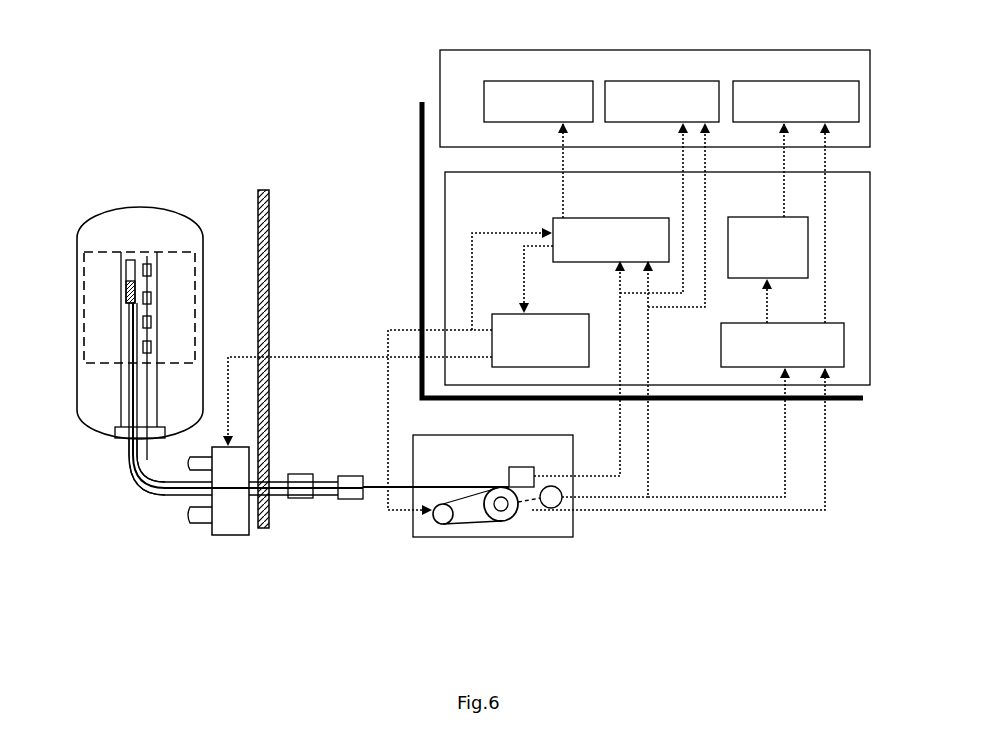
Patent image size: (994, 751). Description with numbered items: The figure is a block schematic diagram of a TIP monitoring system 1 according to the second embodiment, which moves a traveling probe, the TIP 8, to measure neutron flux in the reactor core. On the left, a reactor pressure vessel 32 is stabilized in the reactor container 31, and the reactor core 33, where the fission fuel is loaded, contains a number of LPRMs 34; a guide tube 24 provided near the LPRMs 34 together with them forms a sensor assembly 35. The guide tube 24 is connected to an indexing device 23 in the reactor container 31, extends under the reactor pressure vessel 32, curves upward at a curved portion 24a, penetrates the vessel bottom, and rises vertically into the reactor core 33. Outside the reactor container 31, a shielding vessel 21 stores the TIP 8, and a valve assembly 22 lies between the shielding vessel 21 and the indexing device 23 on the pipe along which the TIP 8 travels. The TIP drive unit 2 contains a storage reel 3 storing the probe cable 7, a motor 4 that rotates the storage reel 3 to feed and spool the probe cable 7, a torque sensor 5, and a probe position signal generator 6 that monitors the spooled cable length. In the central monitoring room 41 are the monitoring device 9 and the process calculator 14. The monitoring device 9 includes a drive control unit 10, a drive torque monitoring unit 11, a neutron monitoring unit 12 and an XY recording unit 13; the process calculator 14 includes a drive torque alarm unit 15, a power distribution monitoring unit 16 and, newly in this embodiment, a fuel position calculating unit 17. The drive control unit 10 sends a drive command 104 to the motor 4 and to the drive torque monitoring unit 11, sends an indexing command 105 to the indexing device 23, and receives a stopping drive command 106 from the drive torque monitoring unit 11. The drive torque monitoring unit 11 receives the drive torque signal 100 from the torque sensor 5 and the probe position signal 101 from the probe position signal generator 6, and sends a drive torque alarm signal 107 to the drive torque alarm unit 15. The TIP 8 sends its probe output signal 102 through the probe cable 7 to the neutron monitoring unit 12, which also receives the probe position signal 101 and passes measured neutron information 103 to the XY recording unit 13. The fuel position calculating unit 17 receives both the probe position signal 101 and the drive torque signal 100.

The TIP monitoring system 1 is at (366, 593).
The TIP drive unit 2 is at (430, 436).
The storage reel 3 is at (492, 522).
The motor 4 is at (440, 525).
The torque sensor 5 is at (509, 476).
The probe position signal generator 6 is at (533, 512).
The probe cable 7 is at (127, 452).
The TIP 8 is at (126, 296).
The monitoring device 9 is at (445, 206).
The drive control unit 10 is at (578, 314).
The drive torque monitoring unit 11 is at (592, 218).
The neutron monitoring unit 12 is at (803, 323).
The XY recording unit 13 is at (800, 217).
The process calculator 14 is at (440, 72).
The drive torque alarm unit 15 is at (484, 106).
The power distribution monitoring unit 16 is at (770, 81).
The fuel position calculating unit 17 is at (659, 81).
The shielding vessel 21 is at (340, 500).
The valve assembly 22 is at (302, 474).
The indexing device 23 is at (233, 536).
The guide tube 24 is at (128, 338).
The curved portion 24a is at (131, 492).
The reactor container 31 is at (265, 530).
The reactor pressure vessel 32 is at (183, 212).
The reactor core 33 is at (196, 262).
The LPRMs 34 is at (151, 271).
The sensor assembly 35 is at (148, 252).
The central monitoring room 41 is at (420, 156).
The drive torque signal 100 is at (681, 164).
The probe position signal 101 is at (707, 164).
The probe output signal 102 is at (827, 448).
The measured neutron information 103 is at (782, 206).
The drive command 104 is at (518, 233).
The indexing command 105 is at (338, 356).
The stopping drive command 106 is at (522, 286).
The drive torque alarm signal 107 is at (561, 164).